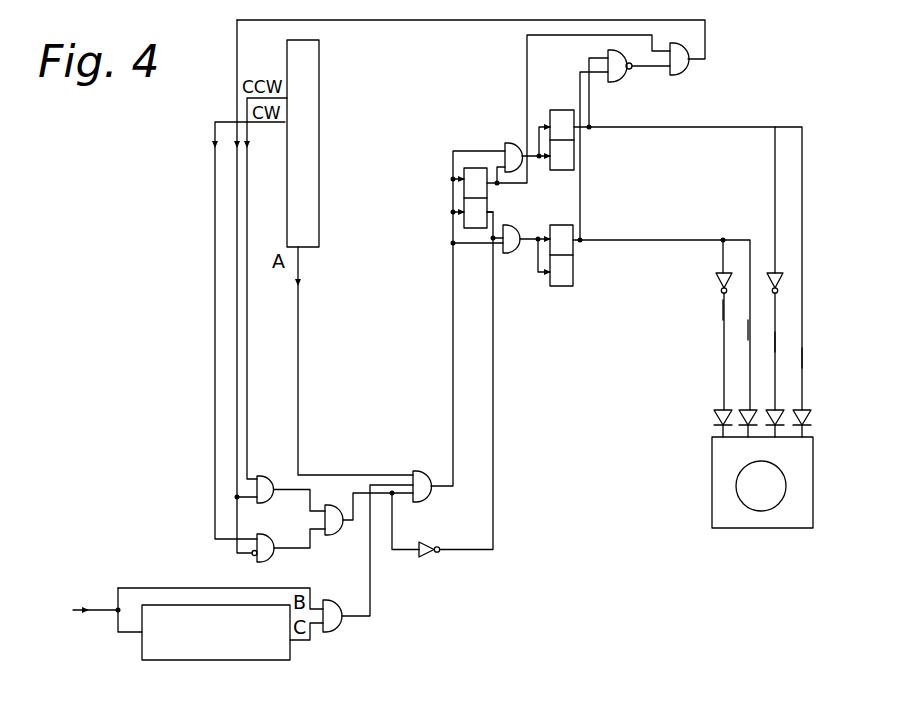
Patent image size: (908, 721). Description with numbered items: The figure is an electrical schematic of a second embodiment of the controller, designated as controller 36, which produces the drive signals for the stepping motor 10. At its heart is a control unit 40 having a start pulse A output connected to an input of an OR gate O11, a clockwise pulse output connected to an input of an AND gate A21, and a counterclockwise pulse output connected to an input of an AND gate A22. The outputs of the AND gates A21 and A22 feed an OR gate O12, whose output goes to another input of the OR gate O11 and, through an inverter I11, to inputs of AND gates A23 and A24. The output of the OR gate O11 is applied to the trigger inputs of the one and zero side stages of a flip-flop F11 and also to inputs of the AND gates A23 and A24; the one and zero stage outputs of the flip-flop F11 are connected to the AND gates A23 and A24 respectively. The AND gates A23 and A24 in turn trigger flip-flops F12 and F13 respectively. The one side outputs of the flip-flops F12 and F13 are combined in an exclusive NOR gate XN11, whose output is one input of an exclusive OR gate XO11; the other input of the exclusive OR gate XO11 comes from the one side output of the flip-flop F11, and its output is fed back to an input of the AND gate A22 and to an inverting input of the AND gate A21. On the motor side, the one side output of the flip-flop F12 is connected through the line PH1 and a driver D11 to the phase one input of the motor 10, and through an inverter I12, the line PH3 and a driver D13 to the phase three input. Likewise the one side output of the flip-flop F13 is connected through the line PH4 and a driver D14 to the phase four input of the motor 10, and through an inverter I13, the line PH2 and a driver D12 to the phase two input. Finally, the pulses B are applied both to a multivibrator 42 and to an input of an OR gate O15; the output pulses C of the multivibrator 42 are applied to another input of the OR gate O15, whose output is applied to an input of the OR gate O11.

The motor 10 is at (813, 497).
The controller 36 is at (168, 272).
The control unit 40 is at (319, 170).
The multivibrator 42 is at (290, 650).
The AND gate A21 is at (270, 562).
The AND gate A22 is at (265, 476).
The AND gate A23 is at (508, 143).
The AND gate A24 is at (512, 253).
The OR gate O11 is at (421, 471).
The OR gate O12 is at (332, 535).
The OR gate O15 is at (332, 632).
The inverter I11 is at (427, 558).
The inverter I12 is at (784, 270).
The inverter I13 is at (716, 282).
The flip-flop F11 is at (475, 168).
The flip-flop F12 is at (556, 110).
The flip-flop F13 is at (565, 286).
The exclusive NOR gate XN11 is at (620, 82).
The exclusive OR gate XO11 is at (688, 66).
The driver D11 is at (806, 409).
The driver D12 is at (723, 410).
The driver D13 is at (782, 410).
The driver D14 is at (748, 409).
The line PH1 is at (801, 358).
The line PH2 is at (723, 310).
The line PH3 is at (774, 342).
The line PH4 is at (748, 329).